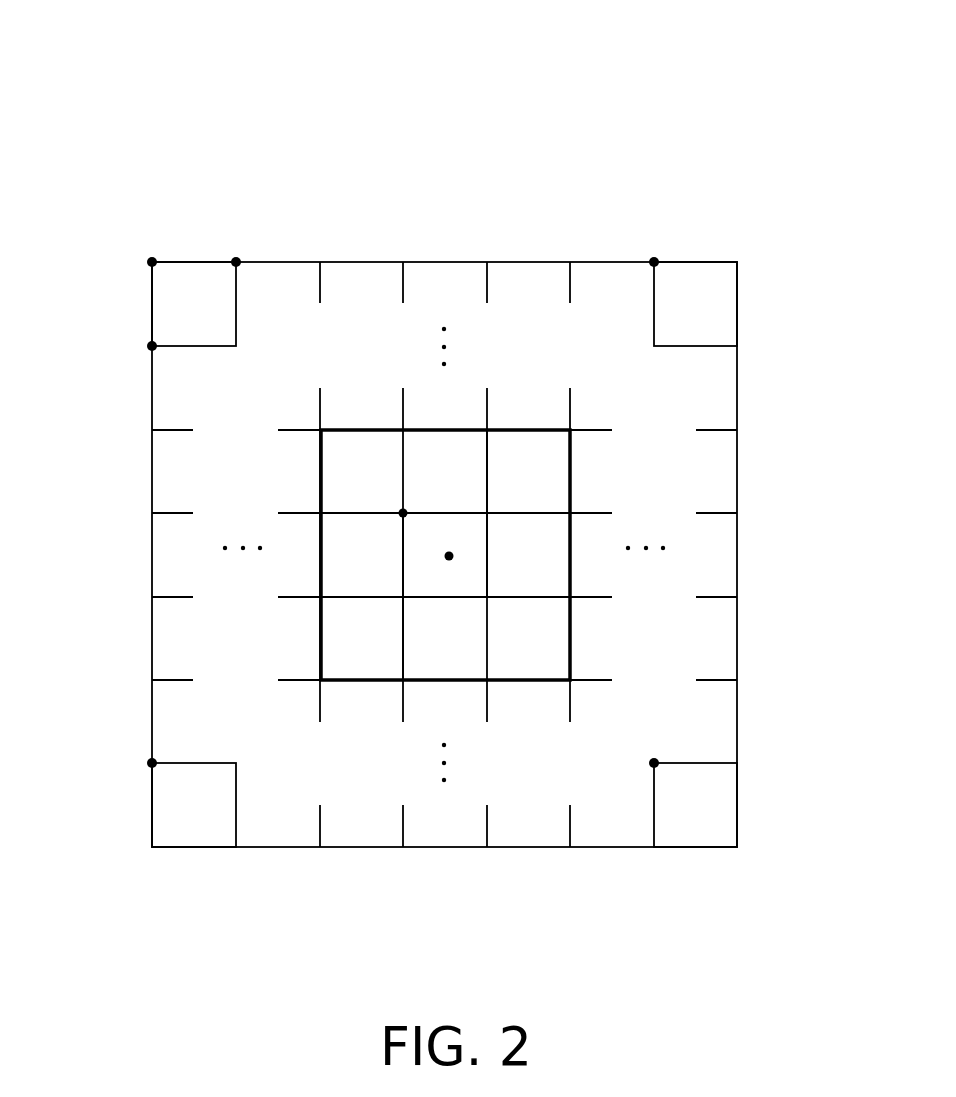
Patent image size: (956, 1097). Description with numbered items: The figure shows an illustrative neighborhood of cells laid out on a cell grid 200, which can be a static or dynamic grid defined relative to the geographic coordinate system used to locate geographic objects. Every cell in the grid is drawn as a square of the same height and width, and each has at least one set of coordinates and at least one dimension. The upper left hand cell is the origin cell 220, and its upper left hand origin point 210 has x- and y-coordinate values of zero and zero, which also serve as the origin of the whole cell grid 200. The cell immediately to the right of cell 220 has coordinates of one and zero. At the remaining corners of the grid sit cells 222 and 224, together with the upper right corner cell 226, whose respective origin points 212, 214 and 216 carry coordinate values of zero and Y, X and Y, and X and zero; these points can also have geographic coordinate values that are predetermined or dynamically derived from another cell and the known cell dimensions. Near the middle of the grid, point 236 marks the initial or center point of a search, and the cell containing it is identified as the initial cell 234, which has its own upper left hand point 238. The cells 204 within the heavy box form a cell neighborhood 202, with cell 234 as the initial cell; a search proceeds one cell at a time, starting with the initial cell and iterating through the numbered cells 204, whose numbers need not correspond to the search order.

The cell grid 200 is at (654, 95).
The cell neighborhood 202 is at (572, 475).
The cells 204 is at (557, 449).
The origin point 210 is at (152, 262).
The origin point 212 is at (152, 763).
The origin point 214 is at (654, 763).
The origin point 216 is at (654, 262).
The origin cell 220 is at (165, 290).
The corner cell 222 is at (170, 823).
The corner cell 224 is at (725, 822).
The corner pixel 226 is at (728, 310).
The initial cell 234 is at (475, 583).
The initial point 236 is at (449, 556).
The upper left hand point 238 is at (403, 513).